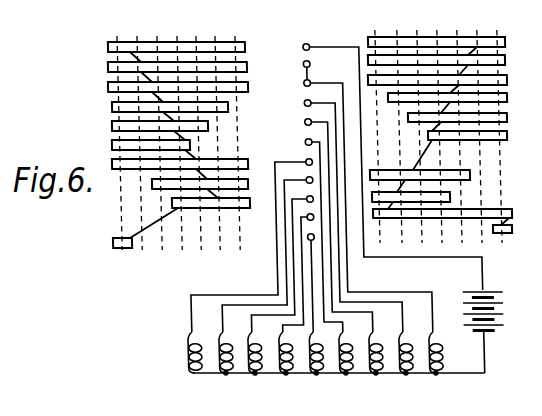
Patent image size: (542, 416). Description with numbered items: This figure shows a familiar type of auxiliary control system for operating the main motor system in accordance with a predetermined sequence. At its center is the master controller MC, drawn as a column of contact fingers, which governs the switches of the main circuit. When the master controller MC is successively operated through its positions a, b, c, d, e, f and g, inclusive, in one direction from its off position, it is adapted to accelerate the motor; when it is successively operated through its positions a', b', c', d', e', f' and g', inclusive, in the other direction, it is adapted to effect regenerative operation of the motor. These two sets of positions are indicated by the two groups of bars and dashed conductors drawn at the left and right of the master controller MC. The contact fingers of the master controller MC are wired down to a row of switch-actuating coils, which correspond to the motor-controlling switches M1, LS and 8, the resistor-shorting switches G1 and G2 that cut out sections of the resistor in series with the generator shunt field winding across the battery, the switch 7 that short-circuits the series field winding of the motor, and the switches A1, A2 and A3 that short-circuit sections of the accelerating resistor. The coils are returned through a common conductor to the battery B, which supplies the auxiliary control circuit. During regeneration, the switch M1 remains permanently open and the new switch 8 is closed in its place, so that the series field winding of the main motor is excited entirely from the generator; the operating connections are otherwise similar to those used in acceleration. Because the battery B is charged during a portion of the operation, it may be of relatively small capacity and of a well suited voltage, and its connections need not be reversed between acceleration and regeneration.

The master controller MC is at (286, 139).
The battery B is at (495, 332).
The motor-controlling switch M1 is at (189, 364).
The switch G1 is at (221, 364).
The switch G2 is at (252, 364).
The switch 8 is at (286, 364).
The switch 7 is at (316, 364).
The switch A3 is at (342, 364).
The switch A2 is at (372, 364).
The switch A1 is at (406, 364).
The motor-controlling switch LS is at (439, 364).
The master controller position a is at (238, 134).
The master controller position b is at (219, 134).
The master controller position c is at (199, 134).
The master controller position d is at (181, 134).
The master controller position e is at (160, 134).
The master controller position f is at (141, 134).
The master controller position g is at (121, 134).
The master controller position a' is at (380, 129).
The master controller position b' is at (402, 129).
The master controller position c' is at (421, 129).
The master controller position d' is at (442, 129).
The master controller position e' is at (462, 129).
The master controller position f' is at (481, 129).
The master controller position g' is at (502, 129).